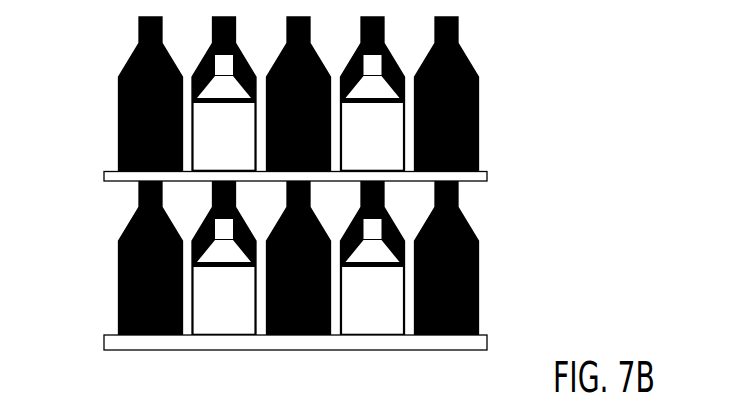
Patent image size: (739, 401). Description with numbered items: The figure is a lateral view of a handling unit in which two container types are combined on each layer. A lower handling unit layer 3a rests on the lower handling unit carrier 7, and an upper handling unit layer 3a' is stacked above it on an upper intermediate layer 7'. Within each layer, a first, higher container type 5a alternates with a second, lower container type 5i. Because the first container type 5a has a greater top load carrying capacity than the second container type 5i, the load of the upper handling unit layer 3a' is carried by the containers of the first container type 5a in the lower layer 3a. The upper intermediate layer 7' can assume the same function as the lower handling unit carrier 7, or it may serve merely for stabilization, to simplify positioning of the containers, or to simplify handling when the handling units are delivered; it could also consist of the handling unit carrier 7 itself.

The upper handling unit layer 3a' is at (221, 94).
The handling unit layer 3a is at (259, 258).
The first container type 5a is at (470, 58).
The second container type 5i is at (373, 315).
The upper intermediate layer 7' is at (326, 168).
The handling unit carrier 7 is at (324, 335).